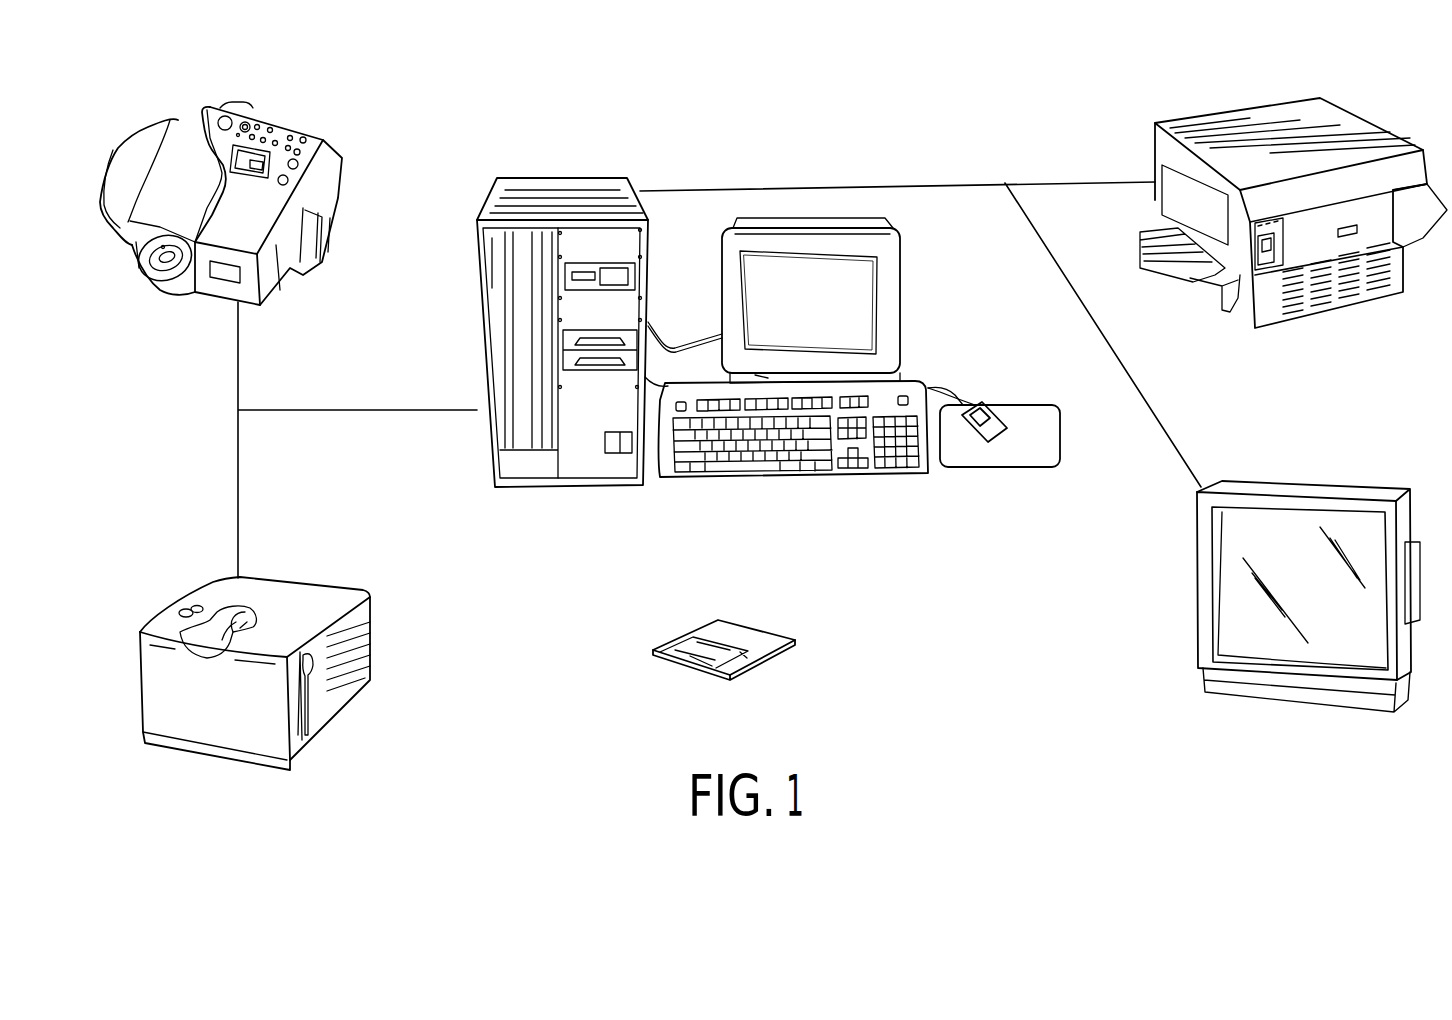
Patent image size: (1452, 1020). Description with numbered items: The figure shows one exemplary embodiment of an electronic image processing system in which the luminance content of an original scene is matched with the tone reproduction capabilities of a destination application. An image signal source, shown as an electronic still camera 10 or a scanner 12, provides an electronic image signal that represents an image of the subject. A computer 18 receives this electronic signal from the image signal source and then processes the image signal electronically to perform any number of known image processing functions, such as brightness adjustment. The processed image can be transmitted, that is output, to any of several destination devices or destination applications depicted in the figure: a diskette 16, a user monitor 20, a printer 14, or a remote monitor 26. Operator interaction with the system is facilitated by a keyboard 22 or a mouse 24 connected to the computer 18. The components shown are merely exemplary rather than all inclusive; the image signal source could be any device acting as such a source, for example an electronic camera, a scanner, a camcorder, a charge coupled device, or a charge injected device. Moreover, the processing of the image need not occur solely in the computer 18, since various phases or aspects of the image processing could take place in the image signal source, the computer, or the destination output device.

The electronic still camera 10 is at (293, 125).
The scanner 12 is at (338, 580).
The printer 14 is at (1155, 140).
The diskette 16 is at (752, 628).
The computer 18 is at (563, 175).
The user monitor 20 is at (903, 310).
The keyboard 22 is at (698, 478).
The mouse 24 is at (1000, 403).
The remote monitor 26 is at (1198, 597).